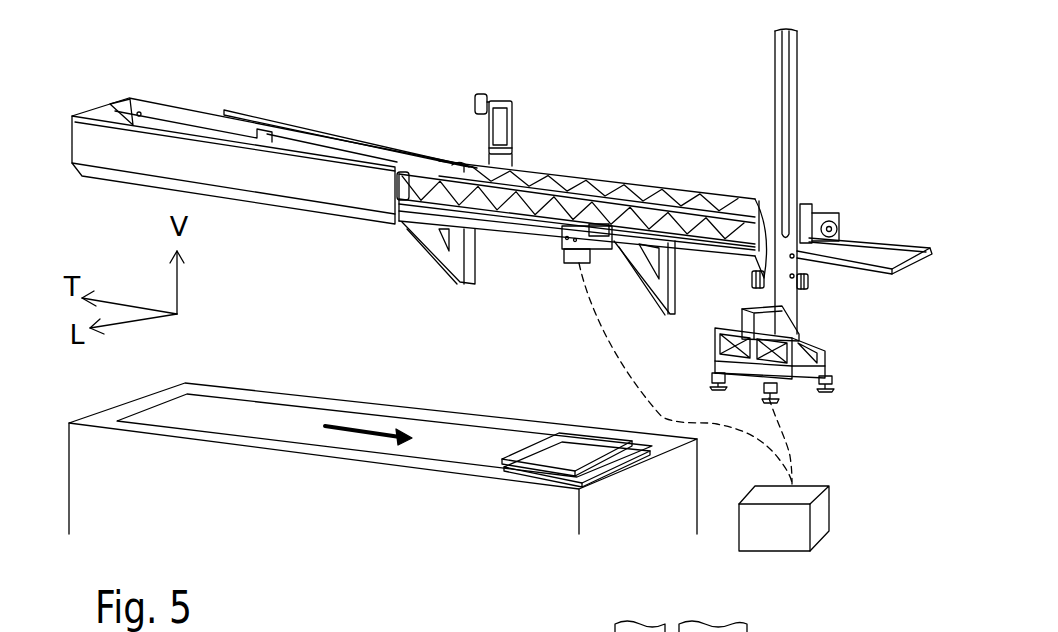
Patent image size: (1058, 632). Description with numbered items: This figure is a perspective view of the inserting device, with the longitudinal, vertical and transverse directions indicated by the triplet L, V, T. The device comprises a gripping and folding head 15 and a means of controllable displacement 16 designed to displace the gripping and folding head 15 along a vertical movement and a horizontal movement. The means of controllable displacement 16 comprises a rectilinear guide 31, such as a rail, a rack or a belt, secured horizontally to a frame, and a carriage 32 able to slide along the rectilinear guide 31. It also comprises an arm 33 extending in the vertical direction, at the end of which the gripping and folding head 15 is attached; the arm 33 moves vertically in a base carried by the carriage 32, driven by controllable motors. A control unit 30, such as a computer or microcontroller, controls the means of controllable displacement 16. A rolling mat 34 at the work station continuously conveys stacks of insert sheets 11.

The insert sheets 11 is at (553, 443).
The gripping and folding head 15 is at (815, 398).
The means of controllable displacement 16 is at (619, 127).
The control unit 30 is at (818, 530).
The rectilinear guide 31 is at (867, 250).
The carriage 32 is at (823, 208).
The arm 33 is at (806, 280).
The rolling mat 34 is at (353, 427).